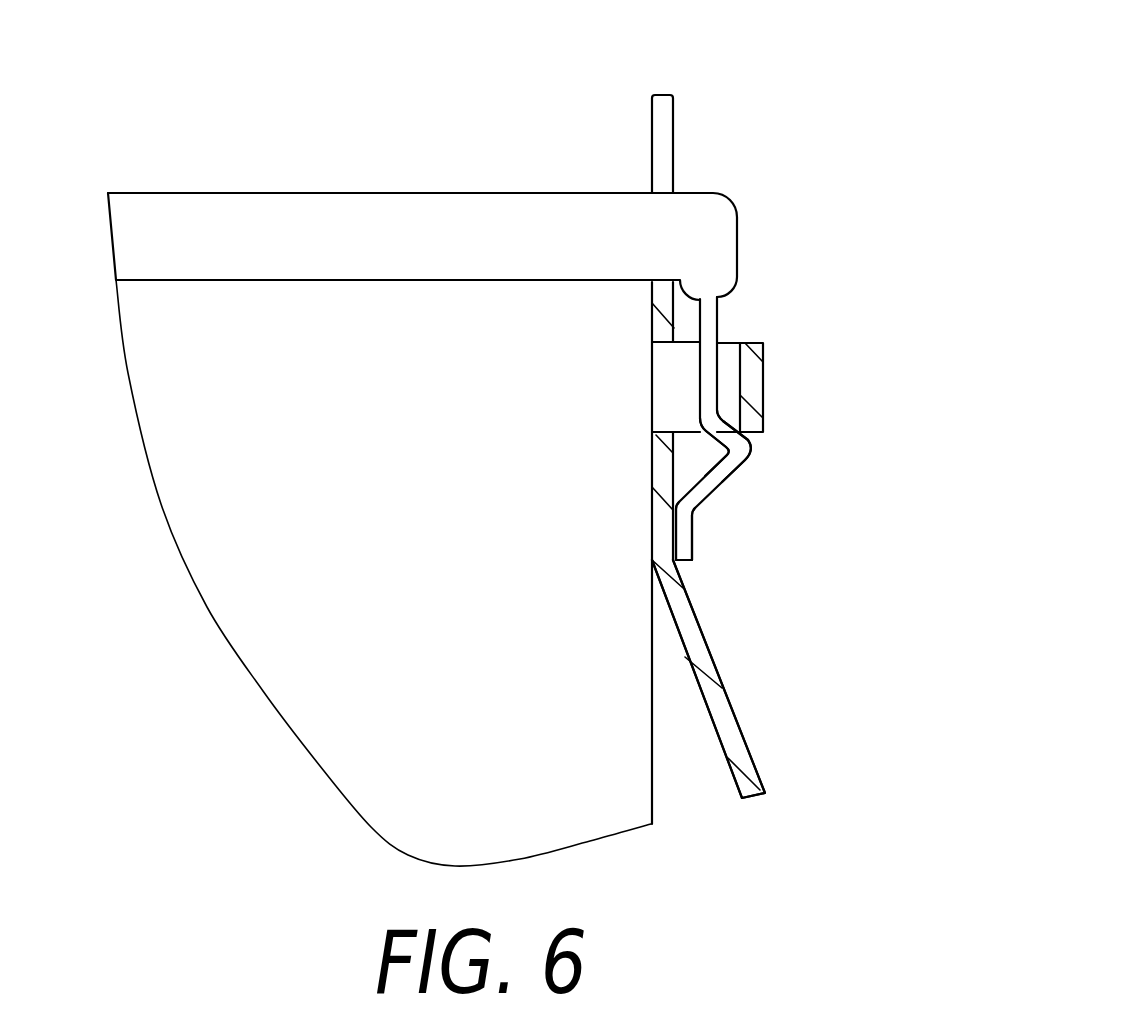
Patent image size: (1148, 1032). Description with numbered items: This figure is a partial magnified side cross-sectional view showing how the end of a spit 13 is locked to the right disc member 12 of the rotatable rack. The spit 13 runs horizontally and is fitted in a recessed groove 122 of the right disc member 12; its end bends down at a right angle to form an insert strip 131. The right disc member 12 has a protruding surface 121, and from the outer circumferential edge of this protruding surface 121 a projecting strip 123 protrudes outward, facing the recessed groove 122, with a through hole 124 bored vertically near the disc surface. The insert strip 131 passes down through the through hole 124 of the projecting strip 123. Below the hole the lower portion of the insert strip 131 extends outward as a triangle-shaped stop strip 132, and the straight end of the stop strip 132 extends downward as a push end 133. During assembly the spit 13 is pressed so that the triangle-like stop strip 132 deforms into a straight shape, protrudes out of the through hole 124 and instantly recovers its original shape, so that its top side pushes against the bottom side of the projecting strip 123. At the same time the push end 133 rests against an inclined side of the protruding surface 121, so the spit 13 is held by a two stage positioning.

The right disc member 12 is at (717, 707).
The protruding surface 121 is at (708, 679).
The recessed groove 122 is at (663, 138).
The projecting strip 123 is at (752, 390).
The through hole 124 is at (688, 387).
The spit 13 is at (375, 222).
The insert strip 131 is at (710, 322).
The stop strip 132 is at (737, 448).
The push end 133 is at (682, 533).